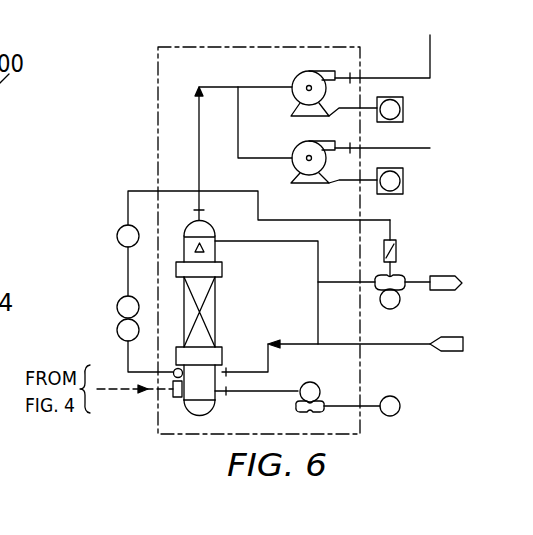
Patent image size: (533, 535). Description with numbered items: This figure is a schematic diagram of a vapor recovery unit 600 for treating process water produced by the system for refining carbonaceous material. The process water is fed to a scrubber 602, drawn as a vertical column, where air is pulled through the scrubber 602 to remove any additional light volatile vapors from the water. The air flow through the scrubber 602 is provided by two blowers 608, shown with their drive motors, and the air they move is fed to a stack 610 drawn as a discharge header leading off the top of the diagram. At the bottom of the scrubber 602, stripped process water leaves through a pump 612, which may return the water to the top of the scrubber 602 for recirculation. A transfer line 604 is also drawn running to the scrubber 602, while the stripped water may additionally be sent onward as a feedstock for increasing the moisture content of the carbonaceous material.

The vapor recovery unit 600 is at (456, 180).
The scrubber 602 is at (216, 291).
The transfer line 604 is at (300, 343).
The blowers 608 is at (315, 69).
The stack 610 is at (430, 53).
The pump 612 is at (322, 394).